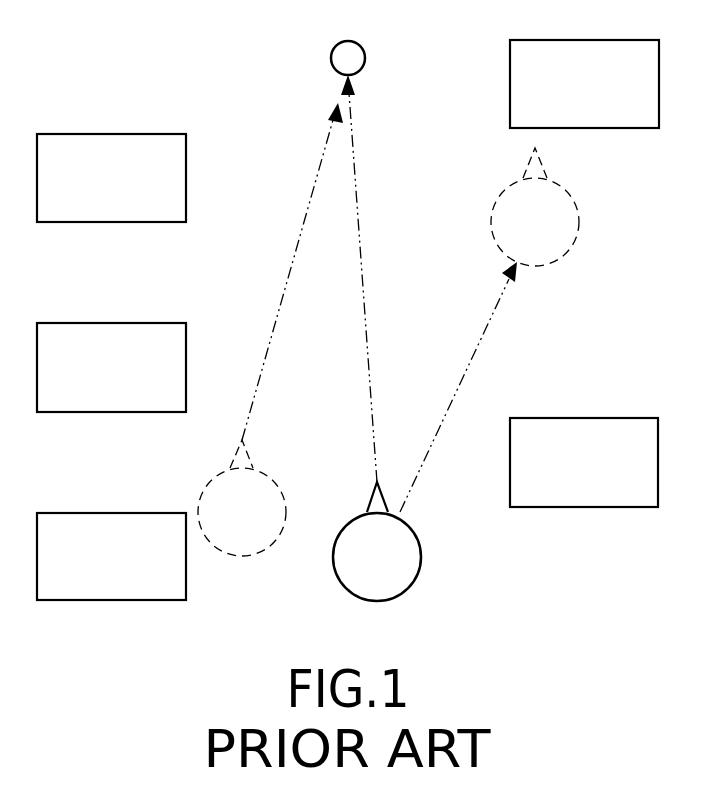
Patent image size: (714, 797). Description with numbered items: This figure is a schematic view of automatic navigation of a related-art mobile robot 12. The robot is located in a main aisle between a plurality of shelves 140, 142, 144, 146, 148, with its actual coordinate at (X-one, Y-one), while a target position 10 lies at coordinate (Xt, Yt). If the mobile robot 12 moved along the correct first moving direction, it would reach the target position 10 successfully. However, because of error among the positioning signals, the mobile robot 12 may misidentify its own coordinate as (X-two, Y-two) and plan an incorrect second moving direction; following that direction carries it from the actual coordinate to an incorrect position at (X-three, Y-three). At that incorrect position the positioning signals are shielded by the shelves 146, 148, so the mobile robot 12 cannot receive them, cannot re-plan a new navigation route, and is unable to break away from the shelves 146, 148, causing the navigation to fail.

The target position 10 is at (360, 57).
The mobile robot 12 is at (265, 475).
The shelf 140 is at (111, 520).
The shelf 142 is at (111, 331).
The shelf 144 is at (111, 142).
The shelf 146 is at (584, 425).
The shelf 148 is at (585, 47).